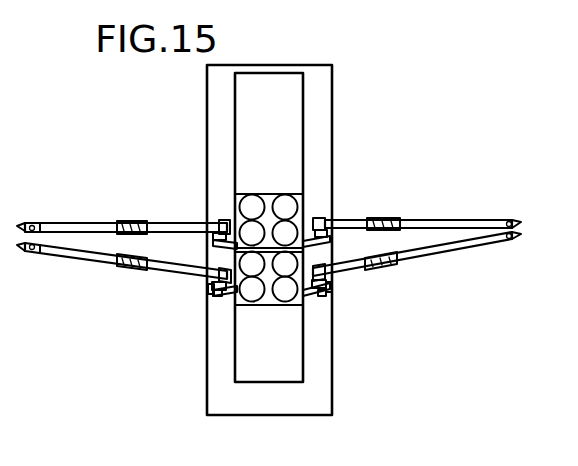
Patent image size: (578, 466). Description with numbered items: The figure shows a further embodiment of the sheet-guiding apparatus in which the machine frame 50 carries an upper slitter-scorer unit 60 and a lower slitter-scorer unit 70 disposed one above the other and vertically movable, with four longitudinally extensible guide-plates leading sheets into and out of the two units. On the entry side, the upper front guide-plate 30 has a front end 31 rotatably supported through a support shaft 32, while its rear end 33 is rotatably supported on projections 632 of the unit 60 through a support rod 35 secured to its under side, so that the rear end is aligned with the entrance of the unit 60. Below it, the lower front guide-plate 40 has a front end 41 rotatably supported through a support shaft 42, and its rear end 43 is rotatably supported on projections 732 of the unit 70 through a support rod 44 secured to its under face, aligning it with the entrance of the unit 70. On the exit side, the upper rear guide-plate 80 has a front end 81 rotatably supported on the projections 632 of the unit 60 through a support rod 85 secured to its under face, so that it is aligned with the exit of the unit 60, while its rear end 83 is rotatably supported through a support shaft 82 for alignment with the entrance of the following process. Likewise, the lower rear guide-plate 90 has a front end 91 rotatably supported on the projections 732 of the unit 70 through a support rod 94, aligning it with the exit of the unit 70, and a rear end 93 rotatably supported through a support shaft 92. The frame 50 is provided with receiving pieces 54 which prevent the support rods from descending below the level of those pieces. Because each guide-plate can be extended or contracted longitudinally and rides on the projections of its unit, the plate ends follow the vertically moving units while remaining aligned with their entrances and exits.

The upper front guide-plate 30 is at (118, 221).
The front end 31 is at (21, 223).
The support shaft 32 is at (45, 223).
The rear end 33 is at (215, 222).
The connecting link 35 is at (207, 222).
The lower front guide-plate 40 is at (115, 265).
The front end 41 is at (20, 252).
The support shaft 42 is at (44, 253).
The rear end 43 is at (230, 300).
The support rod 44 is at (210, 290).
The machine frame 50 is at (220, 99).
The receiving pieces 54 is at (212, 292).
The upper slitter-scorer unit 60 is at (266, 192).
The lower slitter-scorer unit 70 is at (270, 308).
The projections 632 is at (165, 269).
The projections 732 is at (220, 295).
The upper rear guide-plate 80 is at (448, 219).
The front end 81 is at (312, 220).
The support shaft 82 is at (508, 222).
The rear end 83 is at (516, 221).
The support rod 85 is at (325, 216).
The lower rear guide-plate 90 is at (445, 252).
The front end 91 is at (313, 292).
The support shaft 92 is at (508, 240).
The rear end 93 is at (516, 238).
The support rod 94 is at (333, 272).